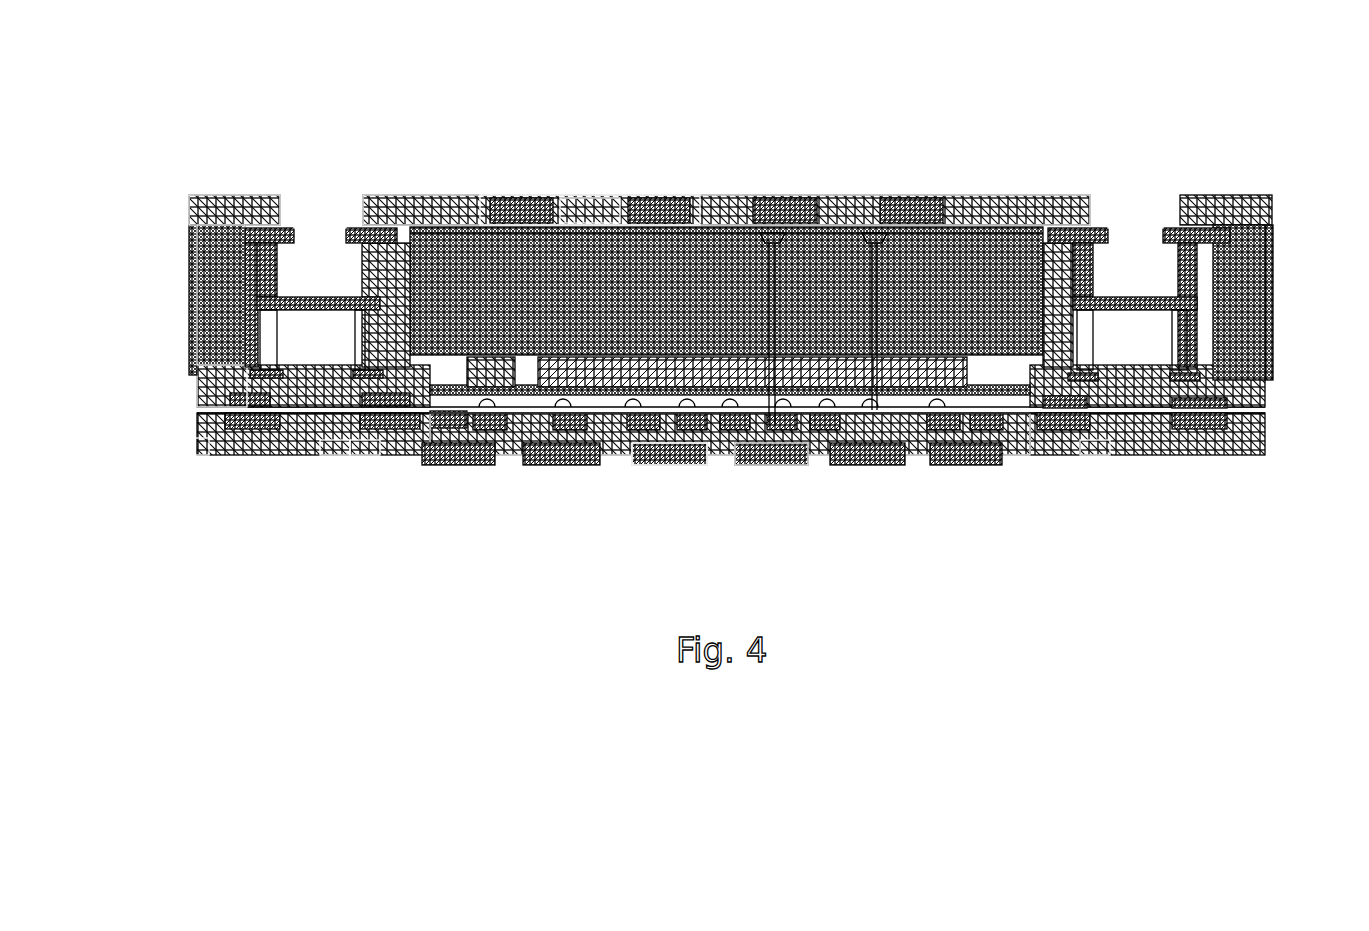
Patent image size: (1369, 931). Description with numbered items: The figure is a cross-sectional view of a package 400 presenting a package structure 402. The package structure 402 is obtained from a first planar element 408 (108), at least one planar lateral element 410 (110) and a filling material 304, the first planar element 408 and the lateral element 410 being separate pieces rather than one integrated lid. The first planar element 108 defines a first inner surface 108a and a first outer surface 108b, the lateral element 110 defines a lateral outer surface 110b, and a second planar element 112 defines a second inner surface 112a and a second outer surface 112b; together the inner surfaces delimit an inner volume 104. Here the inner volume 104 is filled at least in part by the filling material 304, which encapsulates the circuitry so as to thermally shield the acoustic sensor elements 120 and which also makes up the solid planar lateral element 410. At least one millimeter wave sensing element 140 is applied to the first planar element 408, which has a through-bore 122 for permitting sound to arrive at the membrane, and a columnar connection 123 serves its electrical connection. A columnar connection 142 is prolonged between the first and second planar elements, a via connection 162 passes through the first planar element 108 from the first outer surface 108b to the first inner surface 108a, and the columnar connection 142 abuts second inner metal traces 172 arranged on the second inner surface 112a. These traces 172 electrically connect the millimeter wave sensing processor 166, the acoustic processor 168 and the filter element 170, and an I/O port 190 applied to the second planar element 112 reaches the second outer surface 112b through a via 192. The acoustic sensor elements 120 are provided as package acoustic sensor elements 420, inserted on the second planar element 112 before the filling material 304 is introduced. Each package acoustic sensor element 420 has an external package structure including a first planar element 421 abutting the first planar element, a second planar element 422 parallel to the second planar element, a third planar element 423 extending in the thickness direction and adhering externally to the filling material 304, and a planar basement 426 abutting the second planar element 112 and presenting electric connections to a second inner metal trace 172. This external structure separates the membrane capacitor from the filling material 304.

The package 400 is at (978, 90).
The package structure 402 is at (1278, 184).
The first planar element 408 is at (715, 195).
The first planar element 108 is at (726, 210).
The first inner surface 108a is at (478, 195).
The first outer surface 108b is at (405, 195).
The via connection 162 is at (635, 195).
The columnar connection 142 is at (830, 195).
The acoustic sensor element 120 is at (310, 209).
The package acoustic sensor element 420 is at (357, 209).
The first package acoustic sensor element planar element 421 is at (238, 195).
The through-bore 122 is at (290, 195).
The millimeter wave sensing element 140 is at (181, 245).
The planar lateral element 410 is at (188, 305).
The lateral element 110 is at (221, 295).
The third package acoustic sensor element planar element 423 is at (245, 278).
The columnar connection 123 is at (1190, 345).
The lateral outer surface 110b is at (195, 393).
The second package acoustic sensor element planar element 422 is at (190, 453).
The second planar element 112 is at (252, 453).
The second inner surface 112a is at (360, 453).
The second outer surface 112b is at (333, 453).
The planar basement 426 is at (307, 432).
The filter element 170 is at (447, 460).
The second metal trace 172 is at (606, 465).
The millimeter wave sensing processor 166 is at (668, 465).
The acoustic processor 168 is at (669, 454).
The I/O port 190 is at (745, 465).
The via 192 is at (788, 455).
The filling material 304 is at (1020, 440).
The inner volume 104 is at (730, 434).